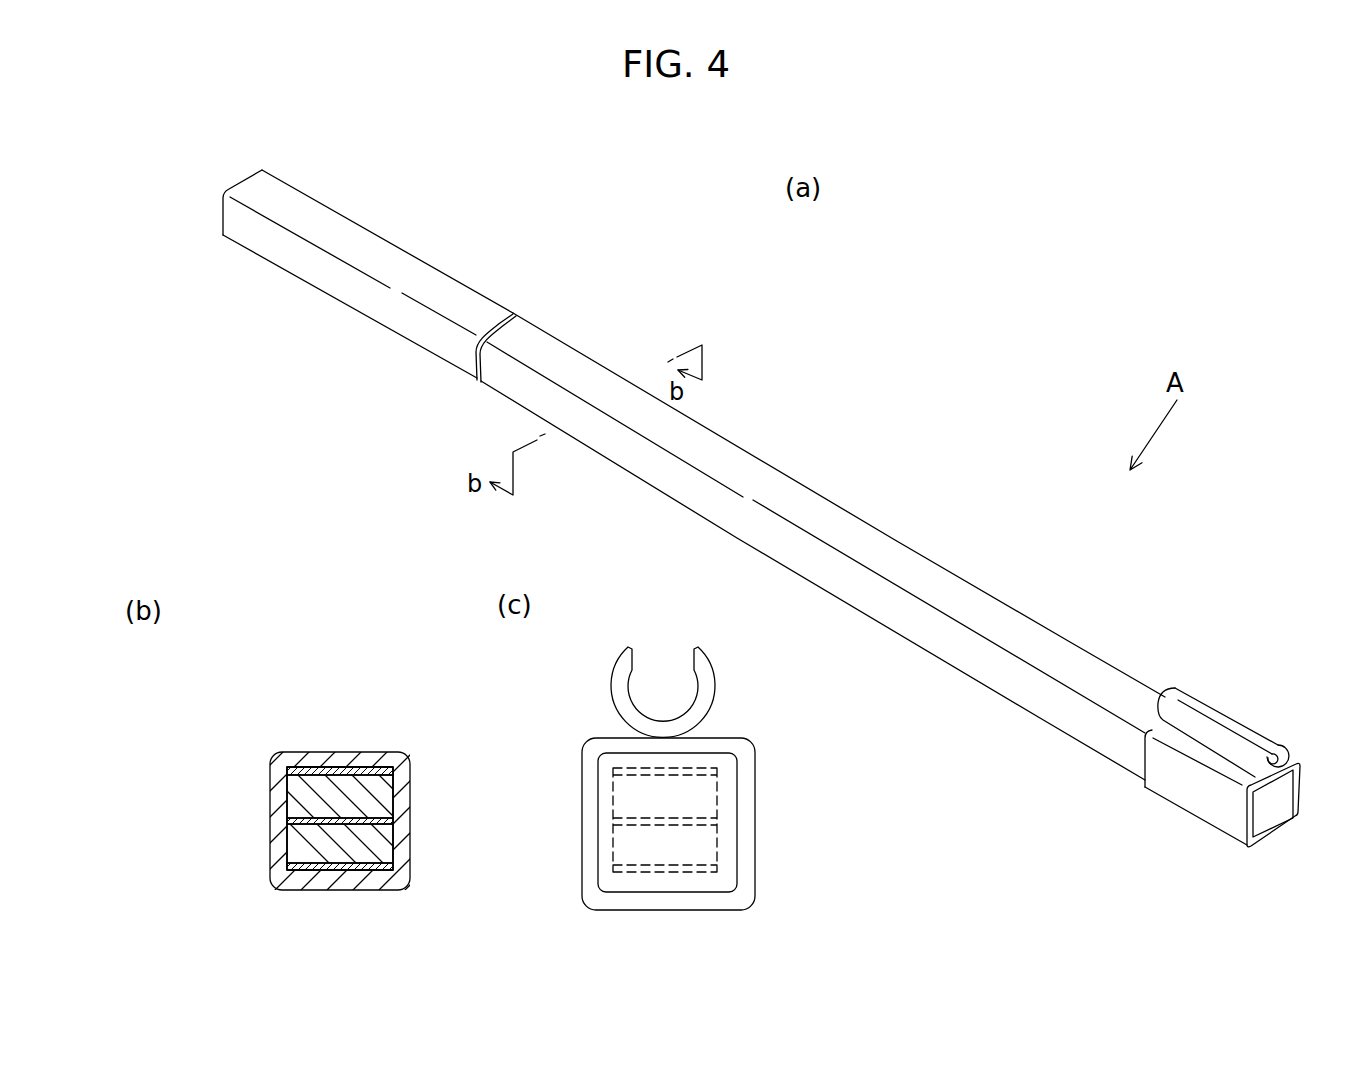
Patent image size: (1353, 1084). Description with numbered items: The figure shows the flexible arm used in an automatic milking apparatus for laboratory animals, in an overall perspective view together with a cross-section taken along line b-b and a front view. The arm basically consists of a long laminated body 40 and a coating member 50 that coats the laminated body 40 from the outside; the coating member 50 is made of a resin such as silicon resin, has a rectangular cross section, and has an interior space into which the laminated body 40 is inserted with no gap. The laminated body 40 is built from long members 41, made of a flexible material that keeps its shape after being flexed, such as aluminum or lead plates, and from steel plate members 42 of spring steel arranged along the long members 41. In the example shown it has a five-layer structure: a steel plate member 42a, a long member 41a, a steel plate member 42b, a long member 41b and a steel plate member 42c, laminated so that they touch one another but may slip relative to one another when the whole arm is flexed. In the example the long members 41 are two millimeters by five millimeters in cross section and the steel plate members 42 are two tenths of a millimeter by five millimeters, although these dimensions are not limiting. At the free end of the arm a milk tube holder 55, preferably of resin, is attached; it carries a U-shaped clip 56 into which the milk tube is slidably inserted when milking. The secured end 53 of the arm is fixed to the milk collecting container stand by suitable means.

The long laminated body 40 is at (148, 715).
The long members 41 is at (319, 835).
The long member 41a is at (323, 797).
The long member 41b is at (323, 848).
The steel plate members 42 is at (272, 840).
The steel plate member 42a is at (323, 768).
The steel plate member 42b is at (303, 821).
The steel plate member 42c is at (317, 870).
The coating member 50 is at (893, 528).
The secured end 53 is at (303, 173).
The milk tube holder 55 is at (1192, 800).
The U-shaped clip 56 is at (1253, 730).